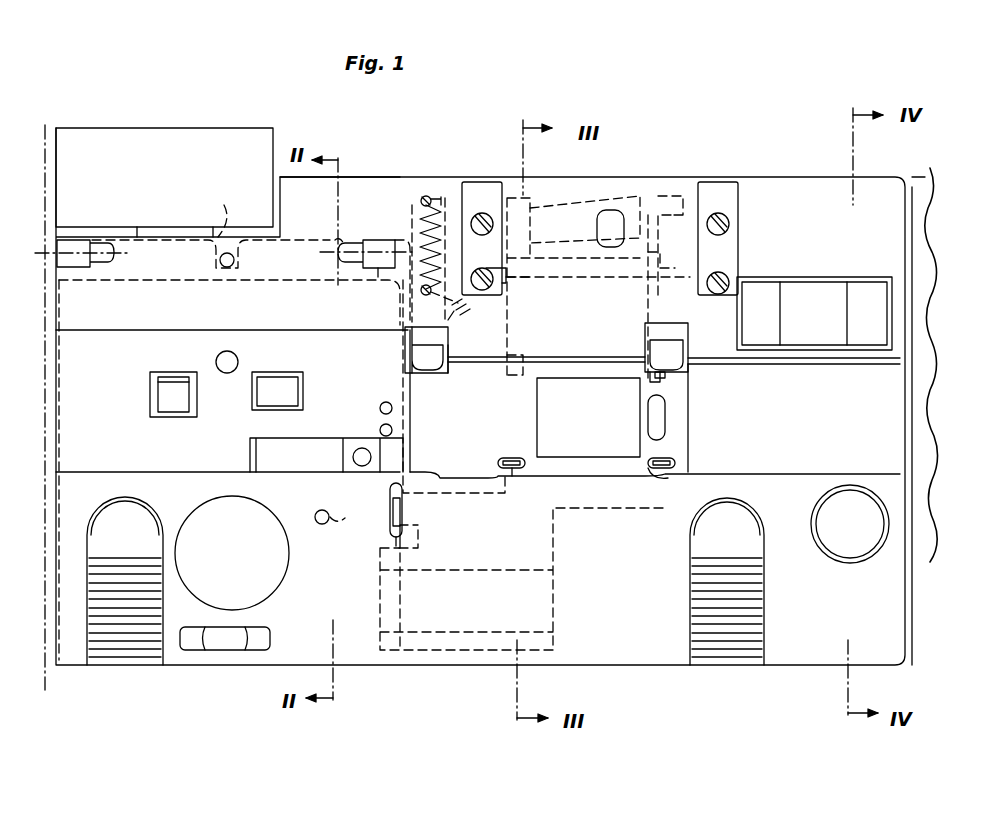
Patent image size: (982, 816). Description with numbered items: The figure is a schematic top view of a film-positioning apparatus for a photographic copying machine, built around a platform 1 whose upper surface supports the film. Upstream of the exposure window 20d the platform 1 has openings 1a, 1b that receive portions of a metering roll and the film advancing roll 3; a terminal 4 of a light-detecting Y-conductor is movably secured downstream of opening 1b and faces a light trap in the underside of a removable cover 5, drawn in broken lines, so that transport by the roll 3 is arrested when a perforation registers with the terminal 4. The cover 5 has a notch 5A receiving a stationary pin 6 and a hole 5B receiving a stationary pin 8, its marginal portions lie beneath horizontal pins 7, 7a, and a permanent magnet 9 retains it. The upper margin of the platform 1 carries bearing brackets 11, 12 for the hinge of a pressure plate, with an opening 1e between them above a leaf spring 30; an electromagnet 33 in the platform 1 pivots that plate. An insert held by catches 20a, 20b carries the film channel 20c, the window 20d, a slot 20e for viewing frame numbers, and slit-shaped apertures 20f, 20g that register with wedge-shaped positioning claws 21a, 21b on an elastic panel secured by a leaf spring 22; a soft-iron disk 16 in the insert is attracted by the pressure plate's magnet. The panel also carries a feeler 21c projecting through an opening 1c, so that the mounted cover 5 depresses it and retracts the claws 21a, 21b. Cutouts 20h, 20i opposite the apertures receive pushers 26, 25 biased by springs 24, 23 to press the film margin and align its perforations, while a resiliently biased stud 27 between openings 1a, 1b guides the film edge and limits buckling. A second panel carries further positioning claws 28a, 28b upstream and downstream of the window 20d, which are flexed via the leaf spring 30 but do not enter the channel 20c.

The platform 1 is at (386, 186).
The opening 1a is at (152, 372).
The opening 1b is at (256, 372).
The opening 1c is at (390, 532).
The opening 1e is at (620, 213).
The film advancing roll 3 is at (290, 381).
The terminal 4 is at (358, 452).
The cover 5 is at (340, 236).
The notch 5A is at (211, 209).
The hole 5B is at (345, 507).
The stationary pin 6 is at (231, 253).
The horizontal pin 7 is at (347, 247).
The horizontal pin 7a is at (97, 243).
The stationary pin 8 is at (316, 514).
The permanent magnet 9 is at (276, 572).
The bearing bracket 11 is at (480, 195).
The bearing bracket 12 is at (712, 194).
The soft-iron disk 16 is at (872, 533).
The locking element 20a is at (718, 648).
The locking element 20b is at (142, 652).
The film channel 20c is at (870, 406).
The exposure window 20d is at (537, 393).
The slot 20e is at (666, 400).
The slit-shaped aperture 20f is at (676, 460).
The slit-shaped aperture 20g is at (508, 458).
The cutout 20h is at (656, 374).
The cutout 20i is at (448, 368).
The positioning claw 21a is at (670, 476).
The positioning claw 21b is at (512, 478).
The feeler 21c is at (402, 512).
The leaf spring 22 is at (553, 606).
The spring 23 is at (441, 200).
The spring 24 is at (690, 254).
The pusher 25 is at (440, 338).
The pusher 26 is at (676, 334).
The stud 27 is at (224, 373).
The positioning claw 28a is at (518, 345).
The positioning claw 28b is at (664, 382).
The leaf spring 30 is at (578, 210).
The electromagnet 33 is at (803, 300).